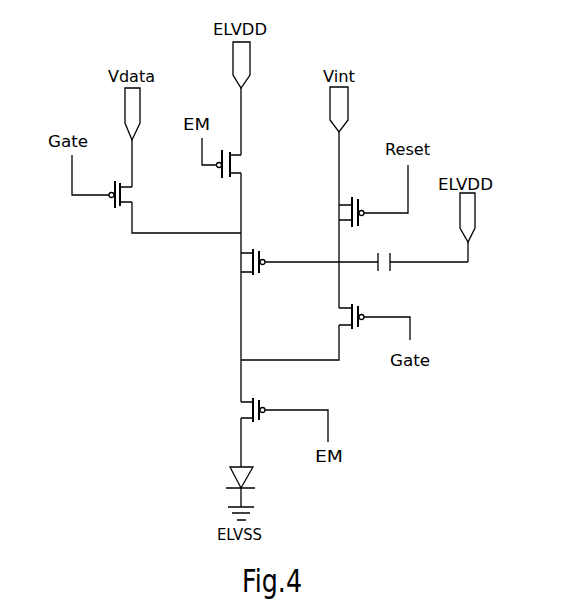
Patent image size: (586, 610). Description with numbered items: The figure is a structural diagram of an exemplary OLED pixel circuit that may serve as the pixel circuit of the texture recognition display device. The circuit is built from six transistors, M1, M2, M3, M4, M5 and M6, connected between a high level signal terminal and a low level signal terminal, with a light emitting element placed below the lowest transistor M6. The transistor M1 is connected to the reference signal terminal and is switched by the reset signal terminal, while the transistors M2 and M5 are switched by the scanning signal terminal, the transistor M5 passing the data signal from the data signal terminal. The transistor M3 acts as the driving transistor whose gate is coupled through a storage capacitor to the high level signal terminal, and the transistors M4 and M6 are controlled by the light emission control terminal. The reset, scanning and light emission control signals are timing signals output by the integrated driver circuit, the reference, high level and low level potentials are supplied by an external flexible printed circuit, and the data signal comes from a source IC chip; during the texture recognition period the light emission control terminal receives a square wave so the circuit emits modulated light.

The first transistor (reset/compensation transistor) M1 is at (335, 212).
The second transistor (switching transistor) M2 is at (334, 316).
The third transistor (driving transistor) M3 is at (232, 262).
The fourth transistor (emission control transistor) M4 is at (248, 164).
The fifth transistor (data write transistor) M5 is at (136, 194).
The sixth transistor (emission control transistor) M6 is at (233, 410).